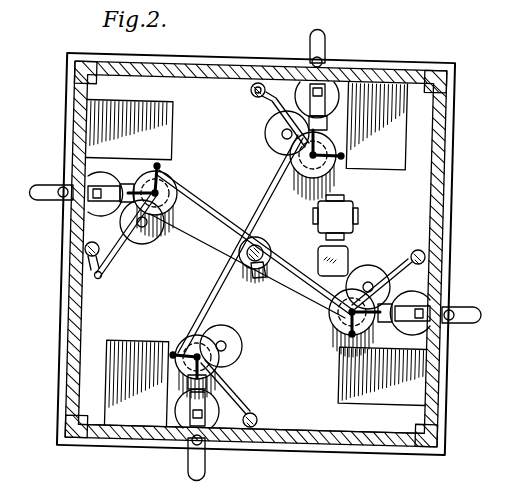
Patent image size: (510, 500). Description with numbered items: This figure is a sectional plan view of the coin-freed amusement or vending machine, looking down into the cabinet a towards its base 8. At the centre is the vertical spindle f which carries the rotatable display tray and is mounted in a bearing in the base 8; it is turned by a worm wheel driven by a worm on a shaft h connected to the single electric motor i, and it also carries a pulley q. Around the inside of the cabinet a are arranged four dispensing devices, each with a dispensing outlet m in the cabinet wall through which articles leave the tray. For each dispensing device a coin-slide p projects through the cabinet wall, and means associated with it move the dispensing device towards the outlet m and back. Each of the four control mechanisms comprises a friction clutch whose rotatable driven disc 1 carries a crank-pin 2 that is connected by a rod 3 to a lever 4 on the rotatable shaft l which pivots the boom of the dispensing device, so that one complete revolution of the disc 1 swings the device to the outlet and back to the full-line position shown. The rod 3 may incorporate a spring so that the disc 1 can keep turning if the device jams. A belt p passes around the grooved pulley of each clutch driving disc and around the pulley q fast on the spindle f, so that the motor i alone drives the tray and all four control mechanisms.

The cabinet a is at (452, 133).
The dispensing outlet m is at (111, 126).
The electric motor i is at (341, 208).
The rotatable shaft l is at (84, 250).
The rod 3 is at (250, 100).
The lever 4 is at (257, 82).
The crank-pin 2 is at (151, 240).
The driven disc 1 is at (176, 182).
The base 8 is at (306, 415).
The spindle f is at (253, 239).
The pulley q is at (259, 270).
The shaft h is at (304, 280).
The coin-slide p is at (55, 188).